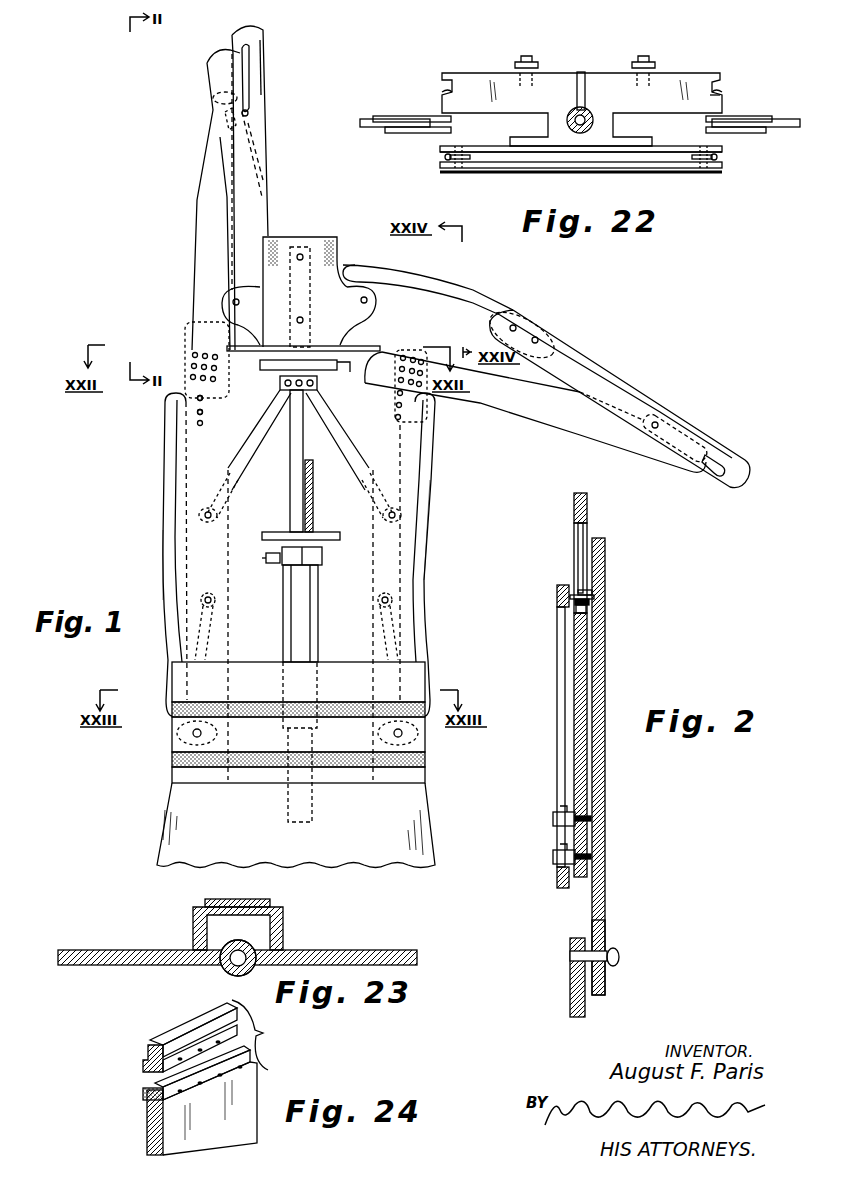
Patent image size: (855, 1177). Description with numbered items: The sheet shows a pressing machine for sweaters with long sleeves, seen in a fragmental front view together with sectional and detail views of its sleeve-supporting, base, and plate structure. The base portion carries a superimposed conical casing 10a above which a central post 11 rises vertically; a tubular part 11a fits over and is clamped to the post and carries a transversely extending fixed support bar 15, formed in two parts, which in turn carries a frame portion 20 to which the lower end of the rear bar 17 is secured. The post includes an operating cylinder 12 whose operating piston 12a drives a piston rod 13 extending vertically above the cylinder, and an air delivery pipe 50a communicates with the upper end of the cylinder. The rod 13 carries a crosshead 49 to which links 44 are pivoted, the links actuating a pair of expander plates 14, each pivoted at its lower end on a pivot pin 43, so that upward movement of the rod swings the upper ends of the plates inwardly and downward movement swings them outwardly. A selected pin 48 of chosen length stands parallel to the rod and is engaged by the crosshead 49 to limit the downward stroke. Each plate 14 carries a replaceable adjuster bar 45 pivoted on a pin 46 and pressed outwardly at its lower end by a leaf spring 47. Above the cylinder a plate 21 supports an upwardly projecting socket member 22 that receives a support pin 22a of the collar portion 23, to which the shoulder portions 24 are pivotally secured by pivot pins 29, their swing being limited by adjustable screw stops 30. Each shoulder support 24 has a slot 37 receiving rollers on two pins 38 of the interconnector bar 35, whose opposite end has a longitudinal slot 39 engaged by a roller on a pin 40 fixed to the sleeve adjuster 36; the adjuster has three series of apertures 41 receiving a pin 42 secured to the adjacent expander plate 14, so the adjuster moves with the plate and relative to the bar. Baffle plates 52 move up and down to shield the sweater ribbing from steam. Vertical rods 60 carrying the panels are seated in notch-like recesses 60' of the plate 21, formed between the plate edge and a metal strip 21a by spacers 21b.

In FIG. 1, the conical casing 10a is at (167, 820).
In FIG. 1, the central post 11 is at (312, 812).
In FIG. 23, the tubular part 11a is at (225, 968).
In FIG. 1, the operating cylinder 12 is at (318, 590).
In FIG. 1, the operating piston 12a is at (340, 536).
In FIG. 1, the piston rod 13 is at (290, 500).
In FIG. 1, the expander plates 14 is at (170, 448).
In FIG. 22, the expander plates 14 is at (400, 133).
In FIG. 2, the expander plates 14 is at (585, 1010).
In FIG. 23, the fixed support bar 15 is at (350, 950).
In FIG. 23, the rear bar 17 is at (254, 898).
In FIG. 23, the frame portion 20 is at (193, 932).
In FIG. 1, the plate 21 is at (264, 364).
In FIG. 22, the plate 21 is at (688, 78).
In FIG. 22, the metal strip 21a is at (582, 168).
In FIG. 22, the spacers 21b is at (480, 163).
In FIG. 22, the socket member 22 is at (592, 135).
In FIG. 22, the support pin 22a is at (577, 80).
In FIG. 1, the collar portion 23 is at (312, 237).
In FIG. 1, the shoulder portions 24 is at (205, 292).
In FIG. 2, the shoulder portions 24 is at (557, 593).
In FIG. 24, the shoulder portions 24 is at (147, 1125).
In FIG. 1, the pivot pin 29 is at (368, 305).
In FIG. 1, the stops 30 is at (335, 245).
In FIG. 1, the sleeve support member 35 is at (268, 100).
In FIG. 2, the sleeve support member 35 is at (588, 512).
In FIG. 1, the sleeve support member 36 is at (207, 88).
In FIG. 2, the sleeve support member 36 is at (605, 556).
In FIG. 1, the slot 37 is at (262, 180).
In FIG. 2, the slot 37 is at (558, 680).
In FIG. 24, the slot 37 is at (130, 1080).
In FIG. 1, the roller-supporting pins 38 is at (536, 328).
In FIG. 2, the roller-supporting pins 38 is at (560, 812).
In FIG. 1, the slot 39 is at (250, 66).
In FIG. 2, the slot 39 is at (578, 550).
In FIG. 1, the pin 40 is at (670, 422).
In FIG. 2, the pin 40 is at (576, 592).
In FIG. 1, the apertures 41 is at (402, 392).
In FIG. 2, the apertures 41 is at (600, 940).
In FIG. 1, the pin 42 is at (400, 370).
In FIG. 2, the pin 42 is at (620, 957).
In FIG. 1, the pivot pin 43 is at (172, 728).
In FIG. 1, the link 44 is at (262, 446).
In FIG. 1, the adjuster bar 45 is at (167, 557).
In FIG. 22, the adjuster bar 45 is at (368, 119).
In FIG. 1, the pivot pin 46 is at (180, 505).
In FIG. 1, the leaf spring 47 is at (200, 615).
In FIG. 1, the pins 48 is at (313, 505).
In FIG. 1, the crosshead 49 is at (280, 386).
In FIG. 1, the air delivery pipe 50a is at (268, 564).
In FIG. 1, the baffle plates 52 is at (262, 660).
In FIG. 22, the rods 60 is at (580, 108).
In FIG. 22, the notch-like recess 60' is at (737, 86).